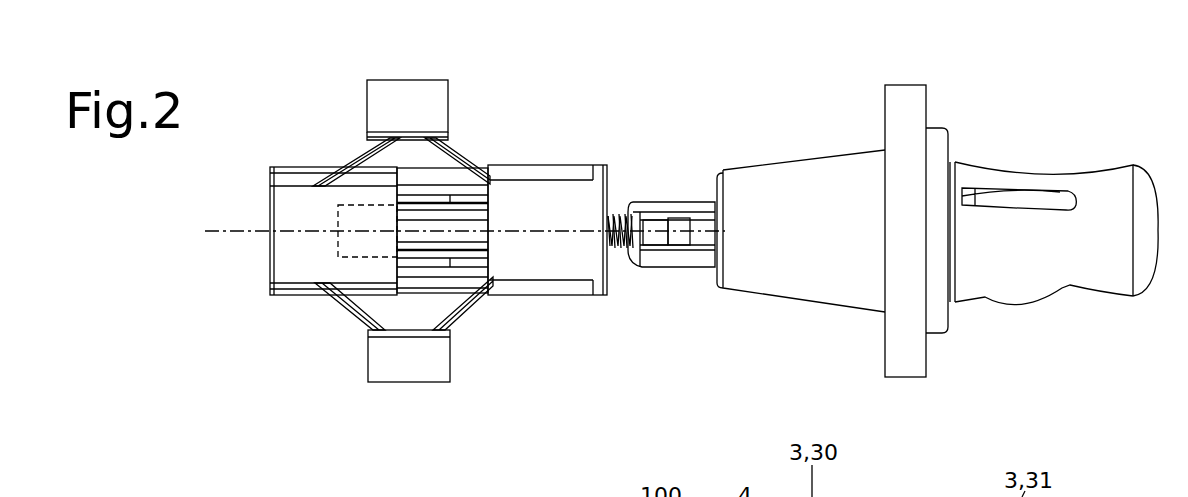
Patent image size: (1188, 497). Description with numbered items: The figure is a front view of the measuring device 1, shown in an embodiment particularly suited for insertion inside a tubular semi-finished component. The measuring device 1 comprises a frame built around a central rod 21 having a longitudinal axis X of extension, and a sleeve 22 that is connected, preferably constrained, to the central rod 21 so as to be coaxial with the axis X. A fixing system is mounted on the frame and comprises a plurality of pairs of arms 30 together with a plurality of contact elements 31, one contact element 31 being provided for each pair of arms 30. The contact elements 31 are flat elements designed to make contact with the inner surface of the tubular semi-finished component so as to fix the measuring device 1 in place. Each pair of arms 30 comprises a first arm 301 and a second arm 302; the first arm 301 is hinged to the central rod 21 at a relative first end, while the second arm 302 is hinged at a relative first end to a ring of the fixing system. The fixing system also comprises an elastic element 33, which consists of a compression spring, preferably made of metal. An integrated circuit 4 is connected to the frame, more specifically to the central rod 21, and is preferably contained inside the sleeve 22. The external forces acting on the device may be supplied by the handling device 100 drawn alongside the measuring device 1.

The measuring device 1 is at (621, 116).
The integrated circuit 4 is at (357, 245).
The central rod 21 is at (680, 211).
The sleeve 22 is at (604, 290).
The pairs of arms 30 is at (420, 231).
The first arm 301 is at (351, 139).
The second arm 302 is at (469, 138).
The contact element 31 is at (412, 98).
The elastic element 33 is at (621, 270).
The handling device 100 is at (1034, 168).
The longitudinal axis X is at (228, 234).